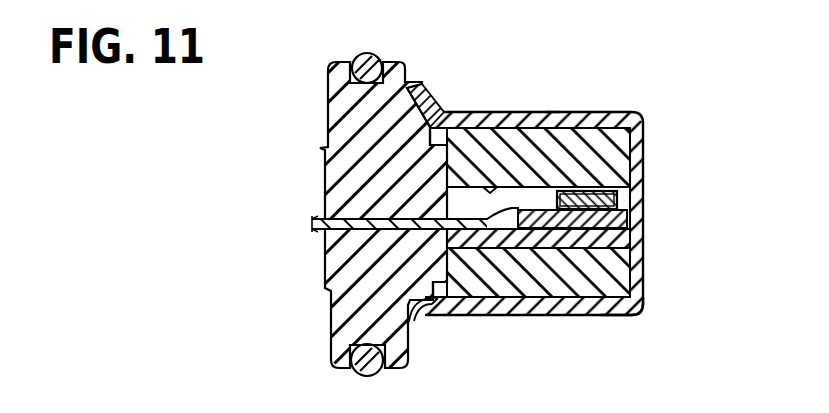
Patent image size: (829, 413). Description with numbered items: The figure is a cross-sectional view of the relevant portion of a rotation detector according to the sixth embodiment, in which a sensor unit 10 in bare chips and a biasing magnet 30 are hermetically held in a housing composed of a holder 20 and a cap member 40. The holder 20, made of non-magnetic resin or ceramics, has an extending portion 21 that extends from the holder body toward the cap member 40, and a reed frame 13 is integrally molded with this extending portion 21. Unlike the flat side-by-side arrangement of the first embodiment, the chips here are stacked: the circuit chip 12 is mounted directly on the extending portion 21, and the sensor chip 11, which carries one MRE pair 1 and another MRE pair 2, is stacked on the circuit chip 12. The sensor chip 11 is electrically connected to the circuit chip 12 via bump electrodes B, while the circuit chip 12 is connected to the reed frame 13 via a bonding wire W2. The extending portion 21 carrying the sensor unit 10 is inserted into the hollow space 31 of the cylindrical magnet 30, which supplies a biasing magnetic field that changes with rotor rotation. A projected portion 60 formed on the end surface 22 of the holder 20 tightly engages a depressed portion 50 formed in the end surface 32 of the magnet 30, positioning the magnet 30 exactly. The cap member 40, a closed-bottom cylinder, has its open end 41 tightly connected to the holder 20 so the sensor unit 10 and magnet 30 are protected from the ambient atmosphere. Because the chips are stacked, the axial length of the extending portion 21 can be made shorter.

The MRE pair 1 is at (612, 195).
The MRE pair 2 is at (587, 200).
The sensor unit 10 is at (602, 233).
The sensor chip 11 is at (624, 217).
The circuit chip 12 is at (632, 241).
The reed frame 13 is at (483, 222).
The holder 20 is at (345, 332).
The extending portion 21 is at (548, 242).
The end surface 22 is at (446, 134).
The biasing magnet 30 is at (640, 308).
The hollow space 31 is at (484, 187).
The end surface 32 is at (413, 296).
The cap member 40 is at (516, 113).
The open end 41 is at (433, 100).
The depressed portion 50 is at (452, 138).
The projected portion 60 is at (457, 266).
The bump electrodes B is at (613, 279).
The bonding wire W2 is at (554, 124).